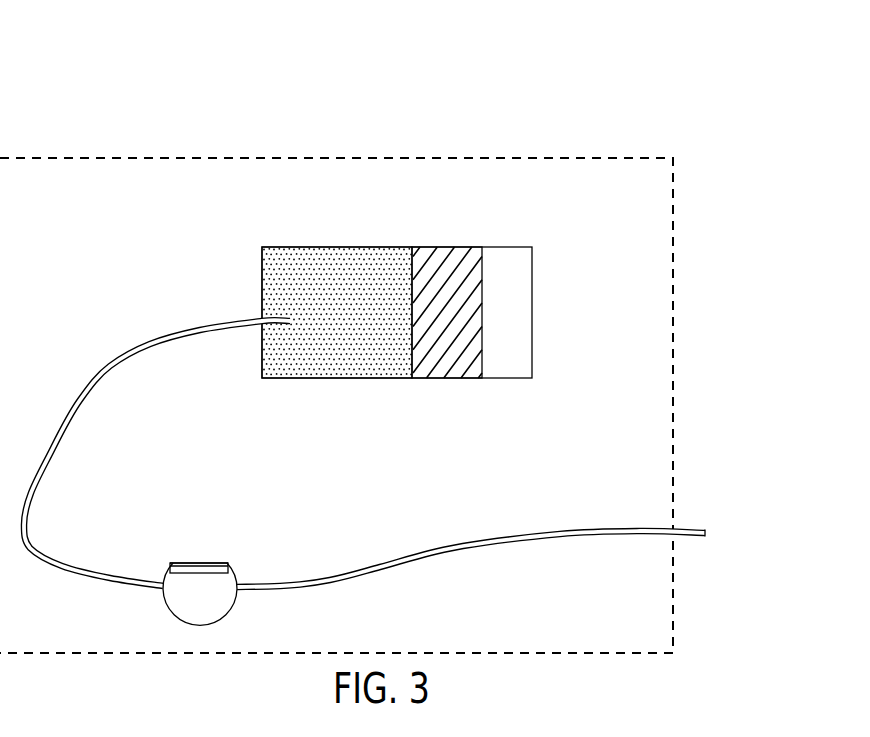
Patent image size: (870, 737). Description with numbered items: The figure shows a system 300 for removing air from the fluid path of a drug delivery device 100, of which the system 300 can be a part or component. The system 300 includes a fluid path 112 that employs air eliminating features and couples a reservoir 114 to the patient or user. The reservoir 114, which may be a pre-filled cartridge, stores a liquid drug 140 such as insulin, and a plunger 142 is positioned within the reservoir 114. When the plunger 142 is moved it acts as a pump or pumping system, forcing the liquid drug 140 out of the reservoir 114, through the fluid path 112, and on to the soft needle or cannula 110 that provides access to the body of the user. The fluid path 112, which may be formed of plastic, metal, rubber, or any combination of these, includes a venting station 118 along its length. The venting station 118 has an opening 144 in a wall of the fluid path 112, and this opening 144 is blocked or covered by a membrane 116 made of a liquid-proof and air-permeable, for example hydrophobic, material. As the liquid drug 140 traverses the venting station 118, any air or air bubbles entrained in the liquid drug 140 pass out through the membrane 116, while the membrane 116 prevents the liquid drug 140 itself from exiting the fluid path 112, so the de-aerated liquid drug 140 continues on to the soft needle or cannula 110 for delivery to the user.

The system for removing air from a fluid path 300 is at (93, 87).
The drug delivery device 100 is at (517, 154).
The liquid drug 140 is at (338, 258).
The reservoir 114 is at (402, 247).
The plunger 142 is at (453, 255).
The fluid path 112 is at (55, 425).
The soft needle or cannula 110 is at (686, 529).
The venting station 118 is at (231, 606).
The membrane 116 is at (200, 563).
The opening 144 is at (172, 562).